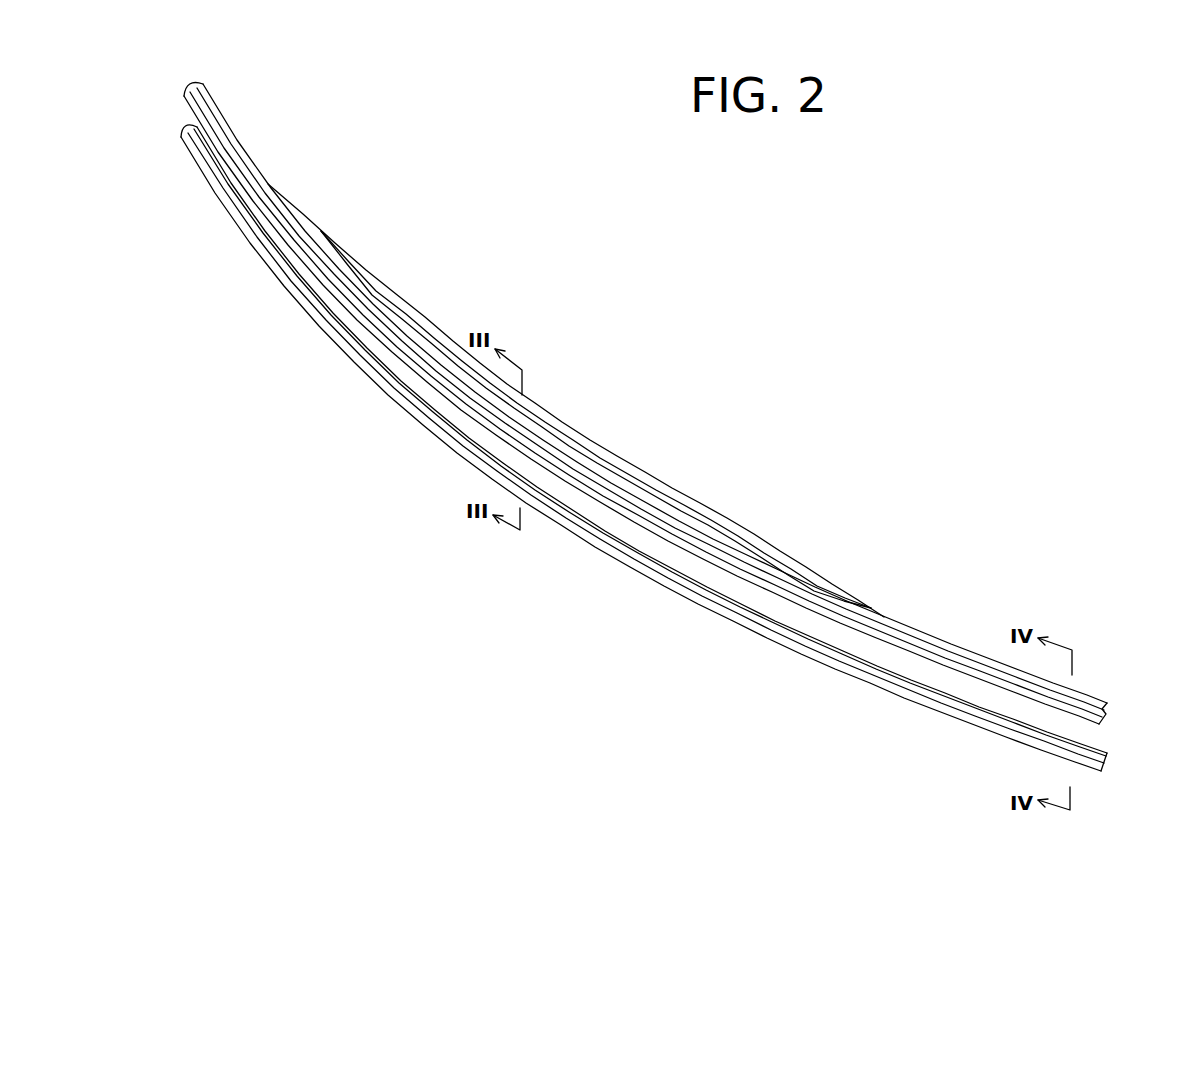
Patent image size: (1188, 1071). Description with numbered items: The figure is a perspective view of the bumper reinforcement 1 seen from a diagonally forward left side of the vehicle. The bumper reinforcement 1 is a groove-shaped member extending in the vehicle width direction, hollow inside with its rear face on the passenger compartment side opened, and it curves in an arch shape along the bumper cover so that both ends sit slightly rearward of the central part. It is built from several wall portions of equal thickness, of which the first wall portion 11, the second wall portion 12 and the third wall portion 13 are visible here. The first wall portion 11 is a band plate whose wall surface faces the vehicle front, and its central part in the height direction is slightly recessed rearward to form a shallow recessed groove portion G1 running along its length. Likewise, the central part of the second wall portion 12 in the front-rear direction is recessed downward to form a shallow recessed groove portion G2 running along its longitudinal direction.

The bumper reinforcement 1 is at (693, 335).
The first wall portion 11 is at (1053, 754).
The second wall portion 12 is at (1104, 712).
The third wall portion 13 is at (1103, 775).
The recessed groove portion G1 is at (990, 703).
The recessed groove portion G2 is at (772, 568).